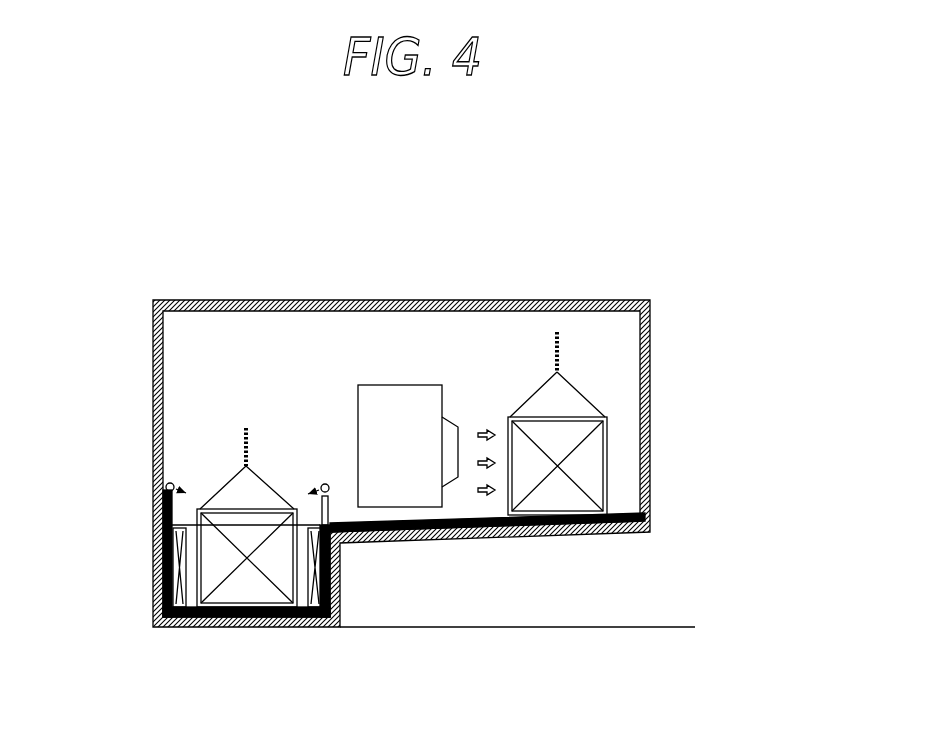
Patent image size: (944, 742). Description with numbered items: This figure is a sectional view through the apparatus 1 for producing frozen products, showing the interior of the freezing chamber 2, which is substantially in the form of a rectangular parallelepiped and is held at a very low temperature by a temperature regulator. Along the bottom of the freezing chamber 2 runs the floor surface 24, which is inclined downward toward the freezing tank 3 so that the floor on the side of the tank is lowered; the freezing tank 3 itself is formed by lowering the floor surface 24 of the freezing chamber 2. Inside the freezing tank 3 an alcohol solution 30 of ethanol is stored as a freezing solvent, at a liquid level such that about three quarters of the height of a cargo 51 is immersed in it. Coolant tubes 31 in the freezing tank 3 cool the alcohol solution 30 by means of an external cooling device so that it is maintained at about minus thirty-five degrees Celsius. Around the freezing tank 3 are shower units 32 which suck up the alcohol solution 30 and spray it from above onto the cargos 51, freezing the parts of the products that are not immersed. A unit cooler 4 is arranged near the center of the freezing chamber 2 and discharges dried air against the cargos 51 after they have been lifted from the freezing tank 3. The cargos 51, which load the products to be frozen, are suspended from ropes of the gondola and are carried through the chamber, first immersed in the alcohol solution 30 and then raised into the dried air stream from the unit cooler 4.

The apparatus for producing frozen products 1 is at (497, 180).
The freezing chamber 2 is at (640, 357).
The freezing tank 3 is at (194, 494).
The unit cooler 4 is at (402, 402).
The floor surface 24 is at (450, 523).
The alcohol solution 30 is at (163, 497).
The coolant tube 31 is at (163, 570).
The shower unit 32 is at (325, 484).
The cargo 51 is at (298, 585).